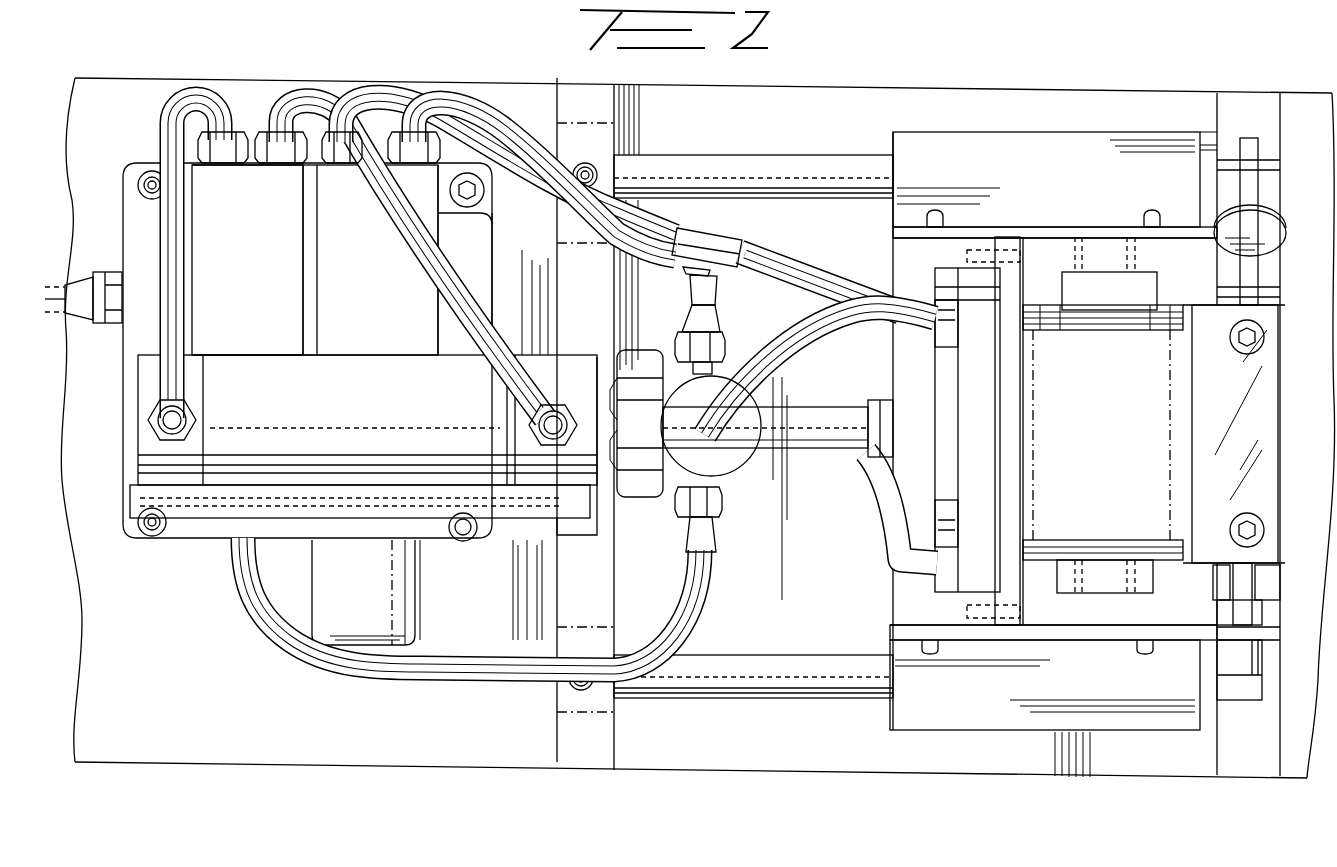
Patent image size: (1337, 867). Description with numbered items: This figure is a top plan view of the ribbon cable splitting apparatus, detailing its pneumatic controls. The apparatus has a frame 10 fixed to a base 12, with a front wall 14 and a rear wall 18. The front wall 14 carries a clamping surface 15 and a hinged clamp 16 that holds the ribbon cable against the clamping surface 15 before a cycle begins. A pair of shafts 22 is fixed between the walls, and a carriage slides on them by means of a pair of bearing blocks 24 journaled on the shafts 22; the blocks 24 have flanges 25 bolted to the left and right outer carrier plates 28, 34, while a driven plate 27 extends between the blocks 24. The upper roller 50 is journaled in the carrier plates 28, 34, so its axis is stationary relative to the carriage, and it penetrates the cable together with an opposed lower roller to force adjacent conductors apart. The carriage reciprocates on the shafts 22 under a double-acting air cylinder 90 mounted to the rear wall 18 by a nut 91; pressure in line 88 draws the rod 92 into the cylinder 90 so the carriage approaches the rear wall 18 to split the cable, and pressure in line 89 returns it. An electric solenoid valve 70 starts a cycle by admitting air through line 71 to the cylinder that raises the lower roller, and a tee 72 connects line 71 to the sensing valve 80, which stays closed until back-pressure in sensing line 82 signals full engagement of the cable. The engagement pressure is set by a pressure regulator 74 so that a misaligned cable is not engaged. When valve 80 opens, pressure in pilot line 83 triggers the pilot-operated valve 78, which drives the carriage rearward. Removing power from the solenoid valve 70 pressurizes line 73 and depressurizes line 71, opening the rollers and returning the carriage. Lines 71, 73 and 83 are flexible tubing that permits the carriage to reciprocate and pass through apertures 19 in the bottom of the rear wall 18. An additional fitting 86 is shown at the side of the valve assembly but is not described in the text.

The frame 10 is at (620, 84).
The base 12 is at (905, 98).
The front wall 14 is at (1268, 110).
The clamping surface 15 is at (1262, 472).
The hinged clamp 16 is at (1252, 206).
The rear wall 18 is at (580, 100).
The apertures 19 is at (620, 126).
The shafts 22 is at (852, 168).
The bearing blocks 24 is at (1030, 173).
The flanges 25 is at (905, 235).
The driven plate 27 is at (900, 560).
The left outer carrier plate 28 is at (1050, 608).
The right outer carrier plate 34 is at (1058, 272).
The upper roller 50 is at (1172, 434).
The electric solenoid valve 70 is at (345, 253).
The line 71 is at (808, 278).
The tee 72 is at (742, 246).
The line 73 is at (722, 314).
The pressure regulator 74 is at (416, 600).
The pilot-operated valve 78 is at (228, 213).
The sensing valve 80 is at (722, 466).
The sensing line 82 is at (852, 316).
The pilot line 83 is at (276, 612).
The inlet fitting 86 is at (92, 285).
The line 88 is at (310, 100).
The line 89 is at (205, 100).
The double-acting air cylinder 90 is at (378, 372).
The nut 91 is at (652, 482).
The rod 92 is at (815, 457).